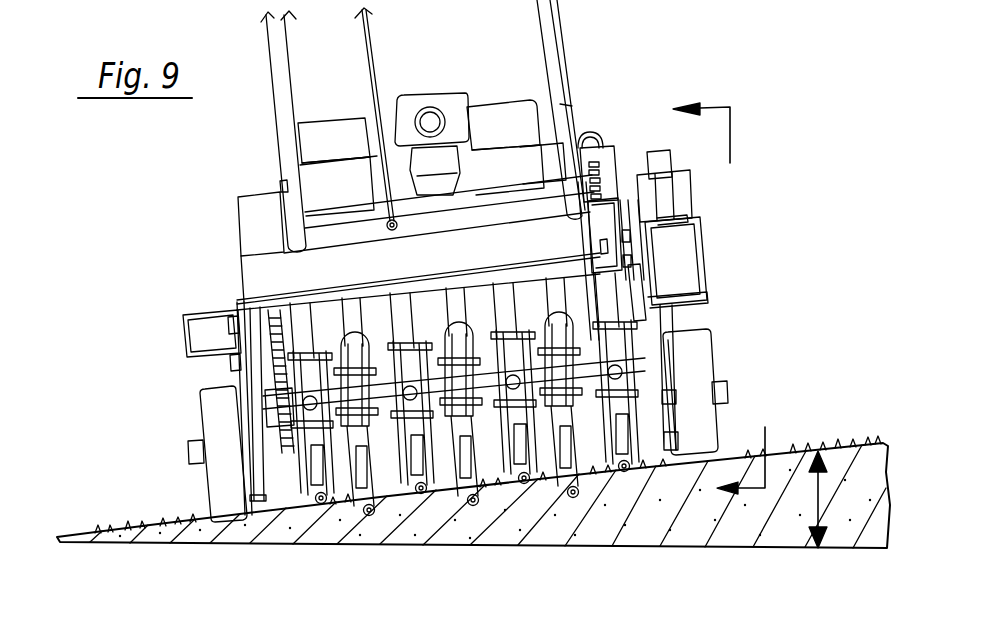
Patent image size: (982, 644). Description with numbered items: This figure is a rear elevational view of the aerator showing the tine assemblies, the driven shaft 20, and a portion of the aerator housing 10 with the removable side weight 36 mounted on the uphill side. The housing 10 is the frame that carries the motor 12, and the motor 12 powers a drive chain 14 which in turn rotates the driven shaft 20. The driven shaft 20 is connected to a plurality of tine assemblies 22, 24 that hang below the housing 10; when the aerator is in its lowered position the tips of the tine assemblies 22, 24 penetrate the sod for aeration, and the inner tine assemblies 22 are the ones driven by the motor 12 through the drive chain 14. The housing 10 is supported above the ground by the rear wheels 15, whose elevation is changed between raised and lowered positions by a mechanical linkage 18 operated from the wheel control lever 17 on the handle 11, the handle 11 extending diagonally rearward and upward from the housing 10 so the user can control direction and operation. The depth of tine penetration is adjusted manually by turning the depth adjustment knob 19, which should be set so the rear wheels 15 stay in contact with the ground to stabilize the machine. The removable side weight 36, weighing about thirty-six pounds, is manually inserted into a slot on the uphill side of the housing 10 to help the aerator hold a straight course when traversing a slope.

The housing 10 is at (486, 254).
The handle 11 is at (280, 53).
The motor 12 is at (447, 103).
The drive chain 14 is at (277, 328).
The rear wheels 15 is at (228, 478).
The wheel control lever 17 is at (560, 40).
The mechanical linkage 18 is at (240, 367).
The depth adjustment knob 19 is at (597, 133).
The driven shaft 20 is at (435, 387).
The inner tine assemblies 22 is at (478, 506).
The tine assemblies 24 is at (370, 515).
The removable side weight 36 is at (685, 200).